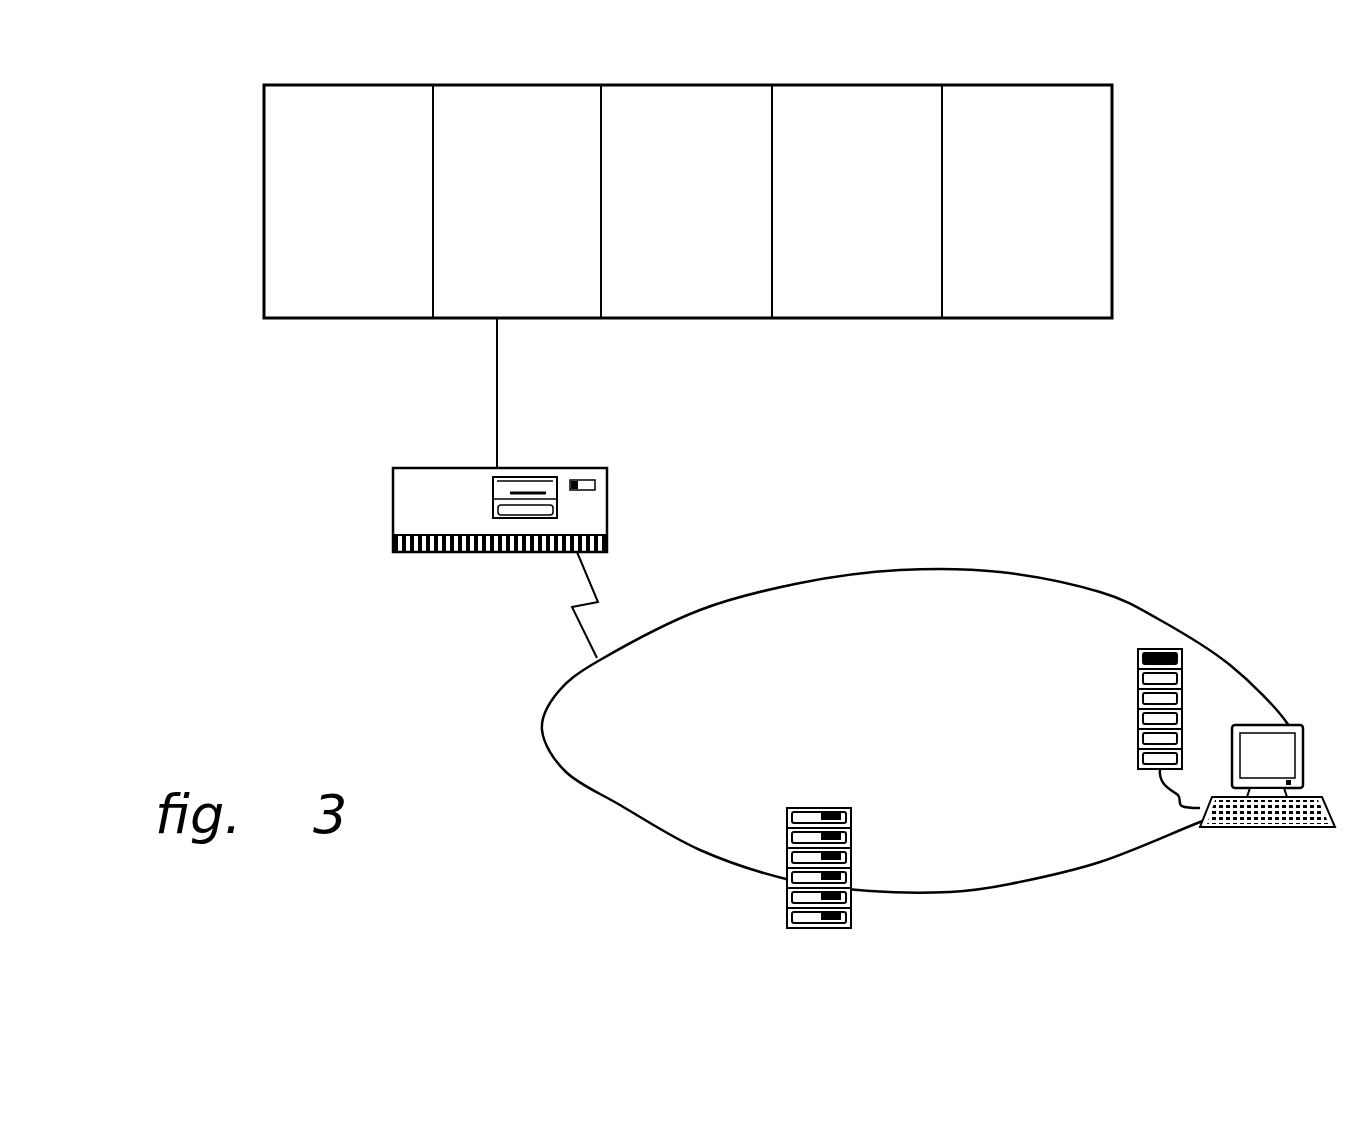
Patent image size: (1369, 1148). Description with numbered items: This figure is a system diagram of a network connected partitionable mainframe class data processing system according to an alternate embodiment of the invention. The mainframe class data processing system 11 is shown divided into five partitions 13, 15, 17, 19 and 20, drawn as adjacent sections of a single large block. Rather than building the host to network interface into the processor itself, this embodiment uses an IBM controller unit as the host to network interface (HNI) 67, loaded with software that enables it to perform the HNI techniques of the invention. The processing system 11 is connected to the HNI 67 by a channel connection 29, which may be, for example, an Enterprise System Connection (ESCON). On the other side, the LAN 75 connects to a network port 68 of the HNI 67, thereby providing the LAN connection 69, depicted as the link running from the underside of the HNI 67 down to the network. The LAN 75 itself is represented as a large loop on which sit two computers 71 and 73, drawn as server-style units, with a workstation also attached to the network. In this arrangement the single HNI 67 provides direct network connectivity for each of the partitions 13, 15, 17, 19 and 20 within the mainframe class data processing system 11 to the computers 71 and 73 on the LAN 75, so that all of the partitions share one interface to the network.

The mainframe class data processing system 11 is at (753, 201).
The partition 13 is at (368, 214).
The partition 15 is at (528, 214).
The partition 17 is at (690, 214).
The partition 19 is at (878, 214).
The partition 20 is at (1041, 214).
The channel connection 29 is at (497, 441).
The host to network interface 67 is at (607, 508).
The network port 68 is at (578, 553).
The LAN connection 69 is at (580, 622).
The computer 71 is at (1138, 725).
The computer 73 is at (818, 808).
The LAN 75 is at (917, 568).